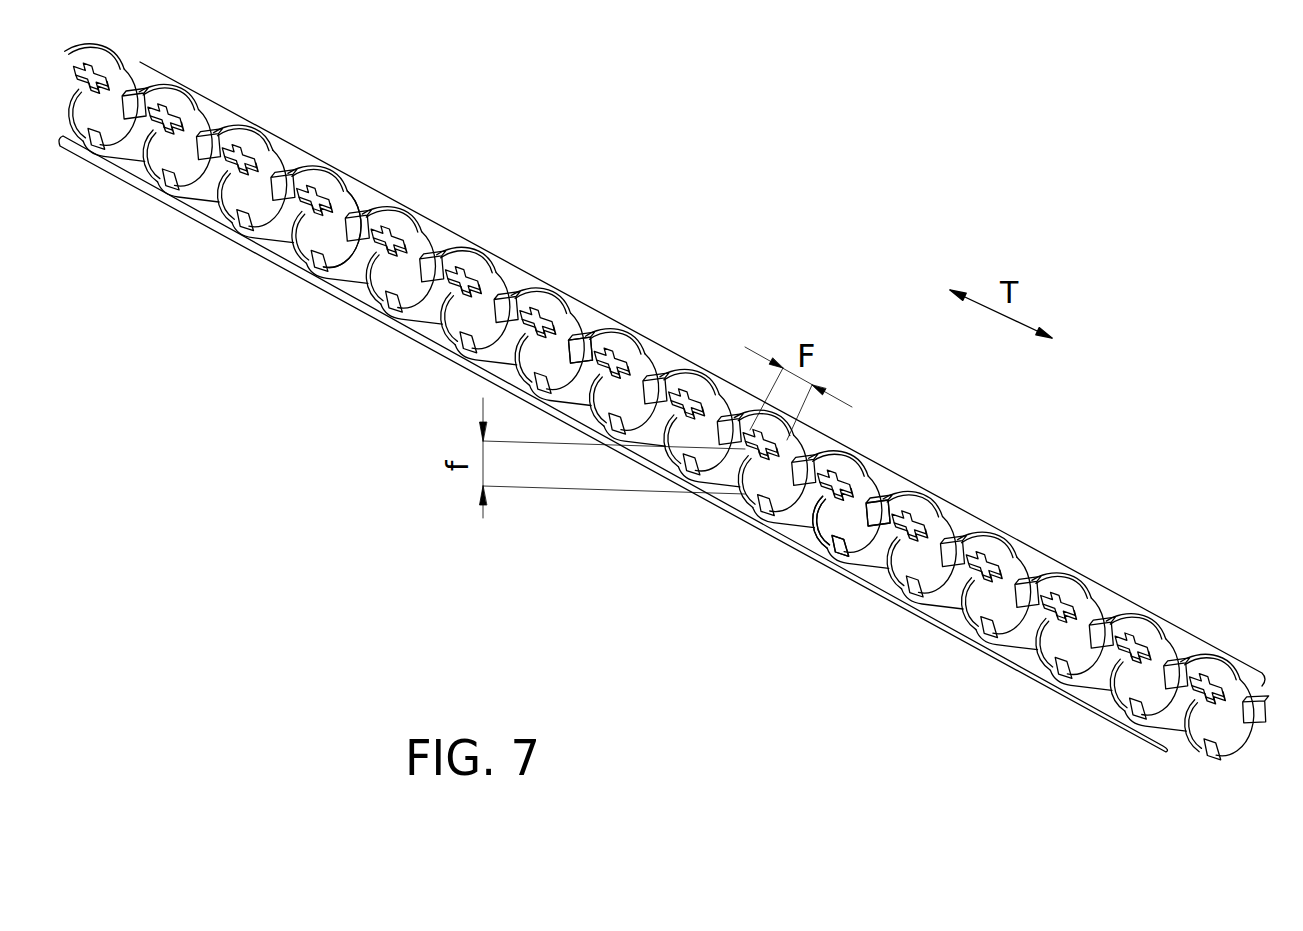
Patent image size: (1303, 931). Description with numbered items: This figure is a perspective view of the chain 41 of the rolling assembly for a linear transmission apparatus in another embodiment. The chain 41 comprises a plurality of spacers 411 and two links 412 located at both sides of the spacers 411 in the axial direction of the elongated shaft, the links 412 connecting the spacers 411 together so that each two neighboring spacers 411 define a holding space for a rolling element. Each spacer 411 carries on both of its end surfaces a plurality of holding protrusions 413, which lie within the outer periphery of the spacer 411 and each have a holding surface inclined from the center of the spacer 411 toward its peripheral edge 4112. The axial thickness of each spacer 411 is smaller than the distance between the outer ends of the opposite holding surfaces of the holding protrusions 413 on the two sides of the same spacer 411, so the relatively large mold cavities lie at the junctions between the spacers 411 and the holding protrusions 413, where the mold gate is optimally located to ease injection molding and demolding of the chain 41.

The chain 41 is at (814, 200).
The spacer 411 is at (343, 205).
The link 412 is at (440, 232).
The holding protrusion 413 is at (588, 336).
The peripheral edge 4112 is at (805, 508).